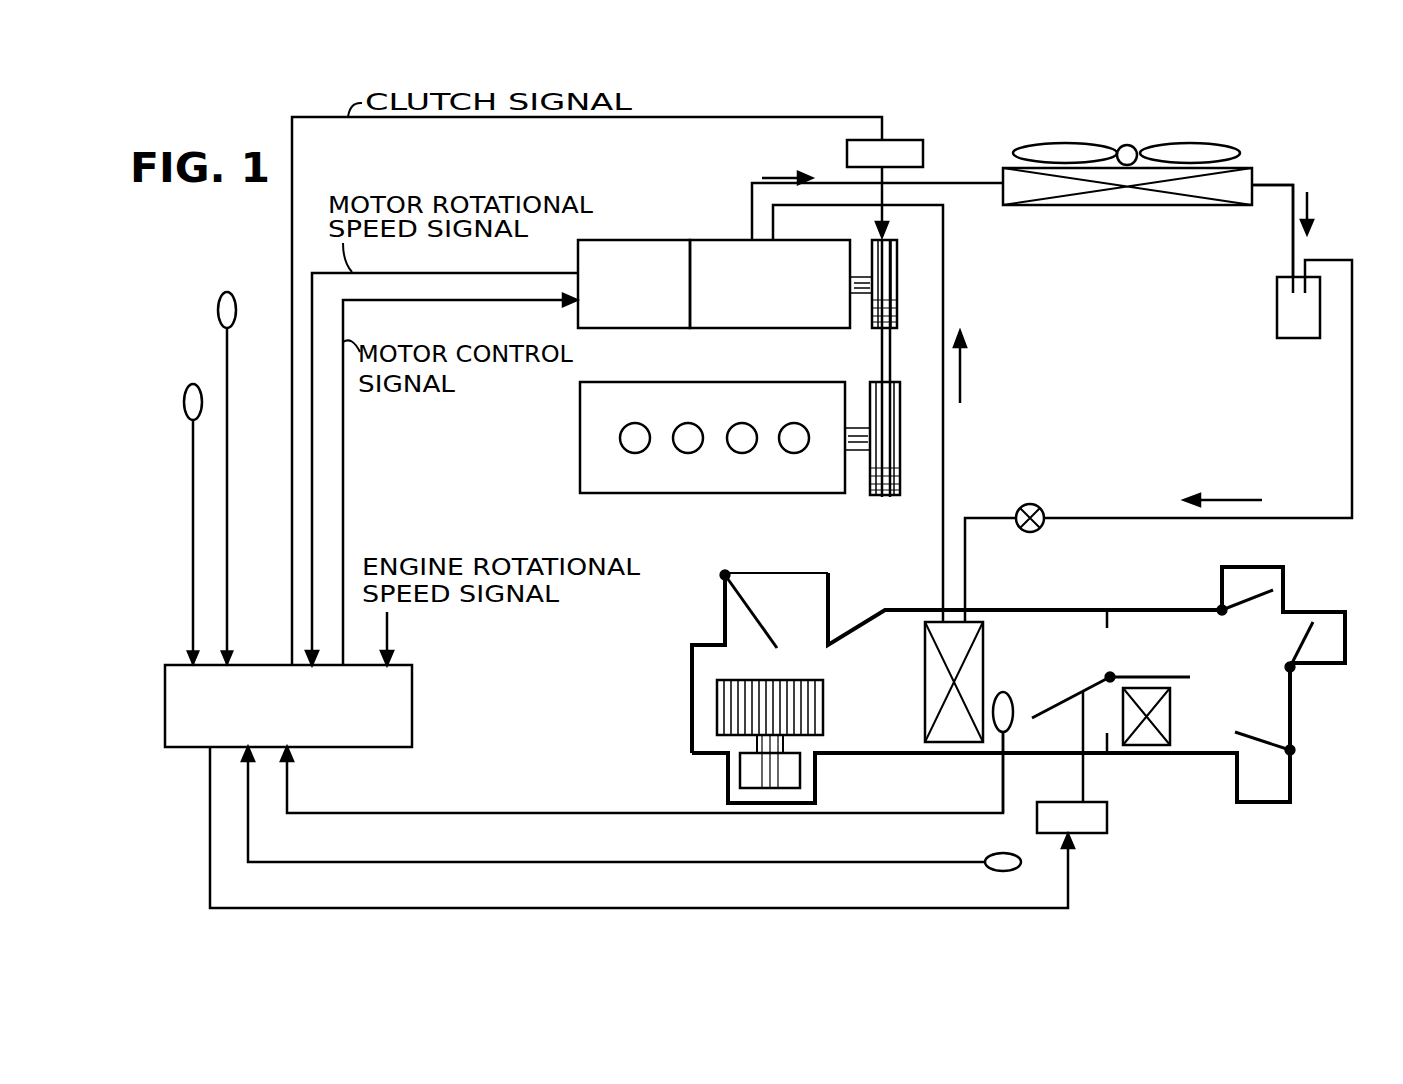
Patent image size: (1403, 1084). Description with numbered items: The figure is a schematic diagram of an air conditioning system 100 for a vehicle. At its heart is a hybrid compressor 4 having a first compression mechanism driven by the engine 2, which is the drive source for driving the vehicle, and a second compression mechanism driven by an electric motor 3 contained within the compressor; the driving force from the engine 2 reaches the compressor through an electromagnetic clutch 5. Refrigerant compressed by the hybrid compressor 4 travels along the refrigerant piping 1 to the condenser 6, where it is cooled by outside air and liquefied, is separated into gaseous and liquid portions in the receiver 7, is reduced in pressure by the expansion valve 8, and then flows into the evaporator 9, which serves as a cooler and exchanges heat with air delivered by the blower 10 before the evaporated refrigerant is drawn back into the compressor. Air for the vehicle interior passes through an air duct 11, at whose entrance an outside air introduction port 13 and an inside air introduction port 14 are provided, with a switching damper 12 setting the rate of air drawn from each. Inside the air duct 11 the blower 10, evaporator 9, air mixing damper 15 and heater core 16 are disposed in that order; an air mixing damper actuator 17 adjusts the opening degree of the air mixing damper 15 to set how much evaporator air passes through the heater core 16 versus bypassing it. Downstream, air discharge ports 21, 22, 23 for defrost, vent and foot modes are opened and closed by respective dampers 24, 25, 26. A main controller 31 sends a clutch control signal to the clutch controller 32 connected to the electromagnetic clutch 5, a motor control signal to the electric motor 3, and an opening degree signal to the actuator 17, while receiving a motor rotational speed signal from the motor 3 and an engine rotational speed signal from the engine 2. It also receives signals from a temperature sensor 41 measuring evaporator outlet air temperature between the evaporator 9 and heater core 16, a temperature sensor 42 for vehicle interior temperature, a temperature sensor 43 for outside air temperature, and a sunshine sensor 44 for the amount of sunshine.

The air conditioning system 100 is at (1218, 117).
The refrigerant cycle piping 1 is at (1296, 176).
The engine 2 is at (580, 438).
The electric motor 3 is at (638, 240).
The hybrid compressor 4 is at (760, 328).
The electromagnetic clutch 5 is at (897, 278).
The condenser 6 is at (1083, 205).
The receiver 7 is at (1277, 312).
The expansion valve 8 is at (1040, 507).
The evaporator 9 is at (925, 700).
The blower 10 is at (717, 712).
The air duct 11 is at (855, 612).
The switching damper 12 is at (757, 622).
The outside air introduction port 13 is at (780, 573).
The inside air introduction port 14 is at (725, 618).
The air mixing damper 15 is at (1050, 708).
The heater core 16 is at (1170, 718).
The air mixing damper actuator 17 is at (1107, 817).
The air discharge port 21 is at (1250, 580).
The air discharge port 22 is at (1345, 640).
The air discharge port 23 is at (1263, 790).
The damper 24 is at (1245, 600).
The damper 25 is at (1302, 640).
The damper 26 is at (1262, 738).
The main controller 31 is at (412, 700).
The clutch controller 32 is at (923, 150).
The temperature sensor 41 is at (1010, 730).
The temperature sensor 42 is at (996, 871).
The temperature sensor 43 is at (218, 311).
The sunshine sensor 44 is at (184, 396).